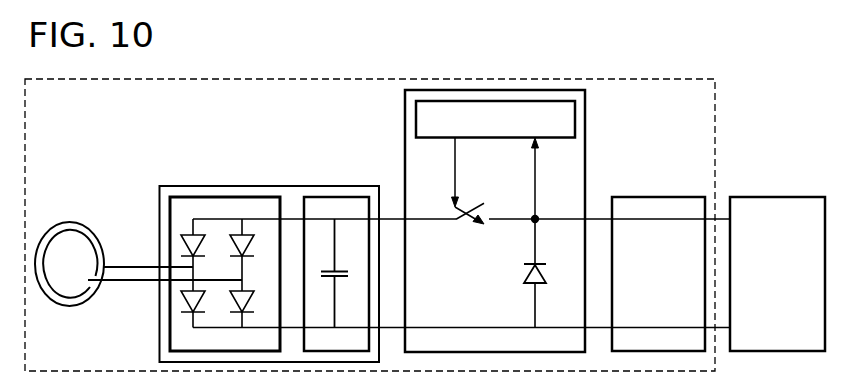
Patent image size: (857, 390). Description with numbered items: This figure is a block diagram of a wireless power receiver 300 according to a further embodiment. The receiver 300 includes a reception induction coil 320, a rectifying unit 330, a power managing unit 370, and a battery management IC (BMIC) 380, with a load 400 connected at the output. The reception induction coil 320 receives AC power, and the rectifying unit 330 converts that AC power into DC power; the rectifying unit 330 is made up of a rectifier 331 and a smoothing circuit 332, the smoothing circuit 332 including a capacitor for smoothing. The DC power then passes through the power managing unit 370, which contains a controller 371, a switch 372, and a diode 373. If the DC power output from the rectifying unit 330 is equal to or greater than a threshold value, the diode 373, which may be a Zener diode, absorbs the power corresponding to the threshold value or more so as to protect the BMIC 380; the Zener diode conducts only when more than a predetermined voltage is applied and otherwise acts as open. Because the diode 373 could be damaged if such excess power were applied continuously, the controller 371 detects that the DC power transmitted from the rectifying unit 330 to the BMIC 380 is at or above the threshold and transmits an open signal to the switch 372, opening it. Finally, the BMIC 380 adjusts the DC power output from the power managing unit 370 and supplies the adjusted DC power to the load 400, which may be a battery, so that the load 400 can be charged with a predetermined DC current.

The wireless power receiver 300 is at (256, 78).
The reception induction coil 320 is at (71, 222).
The rectifying unit 330 is at (174, 186).
The rectifier 331 is at (241, 197).
The smoothing circuit 332 is at (338, 197).
The power managing unit 370 is at (447, 90).
The controller 371 is at (527, 101).
The switch 372 is at (469, 224).
The diode 373 is at (543, 285).
The battery management IC (BMIC) 380 is at (660, 197).
The load 400 is at (780, 197).